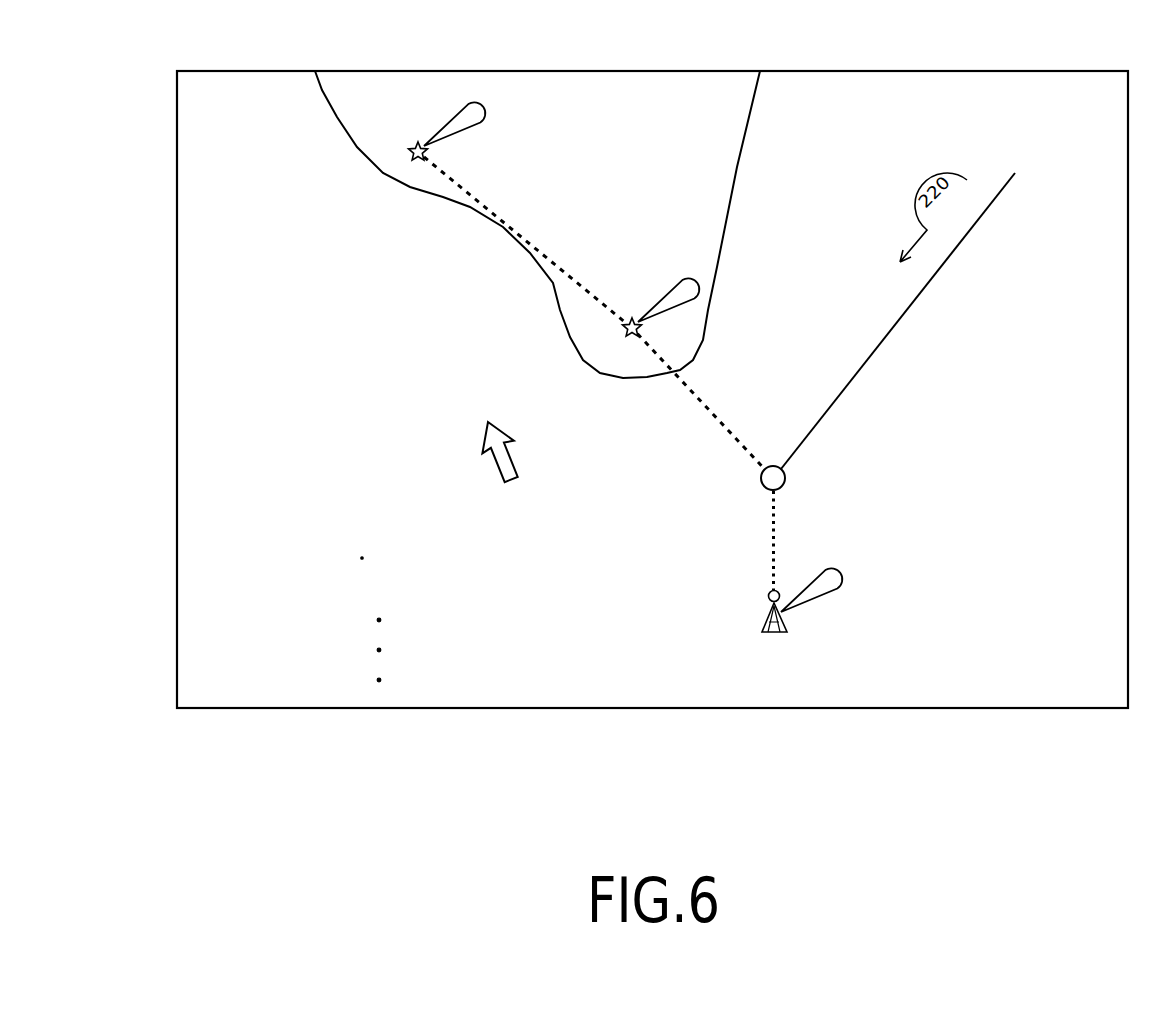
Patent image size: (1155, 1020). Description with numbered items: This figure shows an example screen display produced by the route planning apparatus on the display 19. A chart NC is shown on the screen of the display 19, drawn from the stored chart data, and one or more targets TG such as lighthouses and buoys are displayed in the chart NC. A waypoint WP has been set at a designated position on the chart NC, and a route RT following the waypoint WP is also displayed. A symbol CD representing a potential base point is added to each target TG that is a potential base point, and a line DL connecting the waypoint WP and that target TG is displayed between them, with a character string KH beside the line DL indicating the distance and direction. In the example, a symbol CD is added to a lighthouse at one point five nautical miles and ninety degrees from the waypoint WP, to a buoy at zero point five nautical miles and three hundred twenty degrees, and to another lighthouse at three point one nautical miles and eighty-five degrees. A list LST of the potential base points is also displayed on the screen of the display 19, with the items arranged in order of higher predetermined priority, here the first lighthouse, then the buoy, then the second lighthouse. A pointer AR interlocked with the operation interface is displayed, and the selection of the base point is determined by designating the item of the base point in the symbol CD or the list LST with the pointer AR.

The display 19 is at (240, 70).
The chart NC is at (1063, 97).
The symbol CD is at (473, 107).
The target TG is at (417, 160).
The character string KH is at (417, 277).
The route RT is at (930, 283).
The waypoint WP is at (785, 473).
The line DL is at (687, 397).
The pointer AR is at (505, 458).
The list LST is at (275, 500).